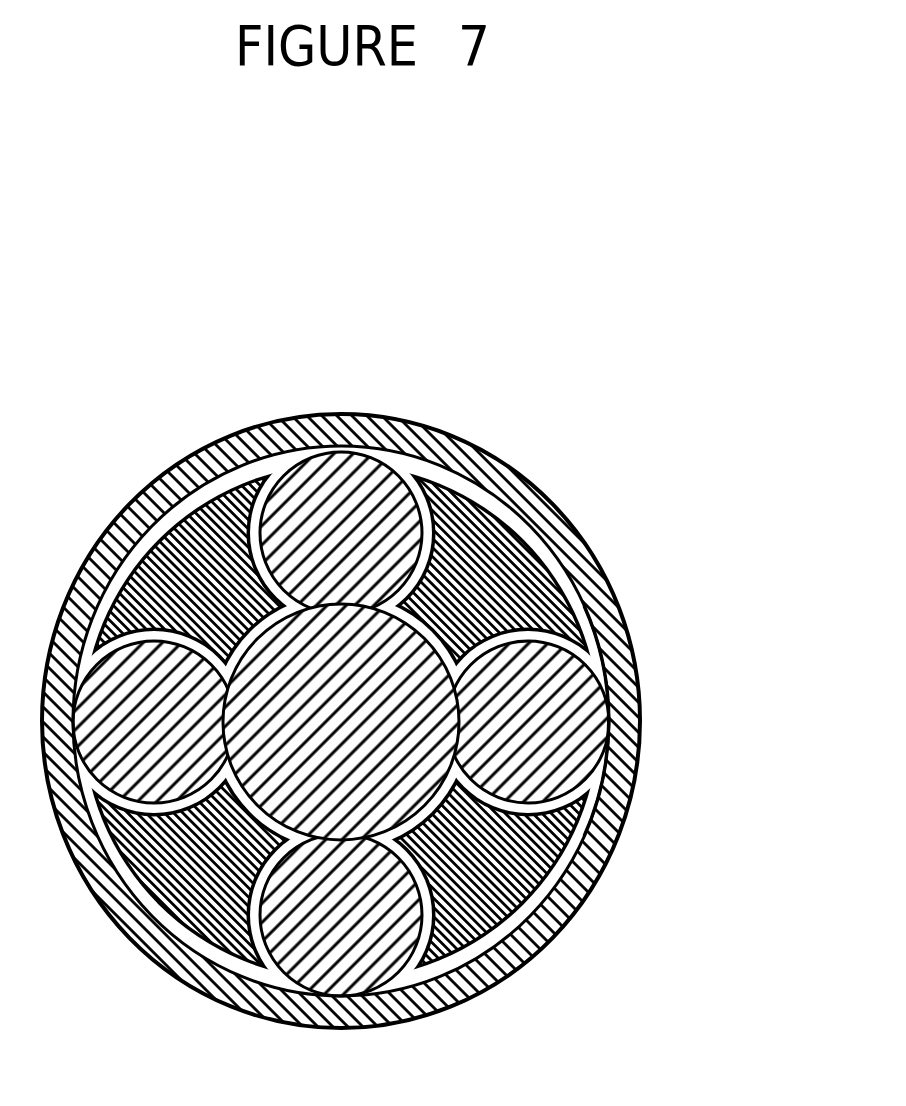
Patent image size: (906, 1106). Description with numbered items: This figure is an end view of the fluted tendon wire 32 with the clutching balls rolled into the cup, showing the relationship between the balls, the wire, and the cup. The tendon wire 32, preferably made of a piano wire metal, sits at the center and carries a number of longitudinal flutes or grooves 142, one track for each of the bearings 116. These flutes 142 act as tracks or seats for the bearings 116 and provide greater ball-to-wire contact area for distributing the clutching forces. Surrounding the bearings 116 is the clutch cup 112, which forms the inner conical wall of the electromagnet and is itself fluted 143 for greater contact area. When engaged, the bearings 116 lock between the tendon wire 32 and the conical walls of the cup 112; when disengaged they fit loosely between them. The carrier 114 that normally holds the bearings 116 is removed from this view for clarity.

The clutch cup 112 is at (535, 482).
The carrier 114 is at (510, 873).
The bearings 116 is at (398, 487).
The fluted tendon wire 32 is at (430, 630).
The flutes 142 is at (453, 720).
The fluting 143 is at (790, 679).